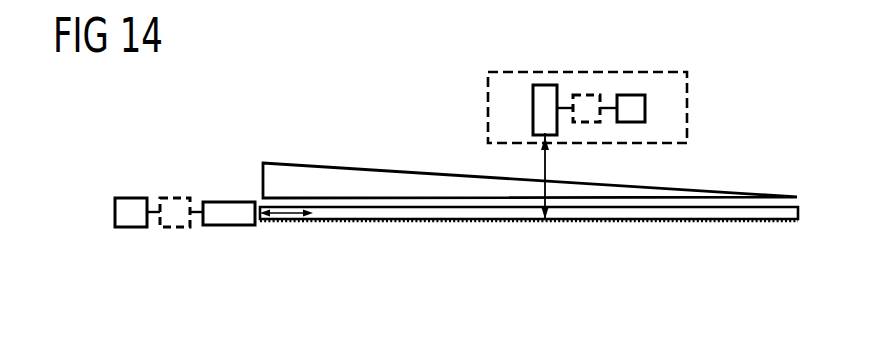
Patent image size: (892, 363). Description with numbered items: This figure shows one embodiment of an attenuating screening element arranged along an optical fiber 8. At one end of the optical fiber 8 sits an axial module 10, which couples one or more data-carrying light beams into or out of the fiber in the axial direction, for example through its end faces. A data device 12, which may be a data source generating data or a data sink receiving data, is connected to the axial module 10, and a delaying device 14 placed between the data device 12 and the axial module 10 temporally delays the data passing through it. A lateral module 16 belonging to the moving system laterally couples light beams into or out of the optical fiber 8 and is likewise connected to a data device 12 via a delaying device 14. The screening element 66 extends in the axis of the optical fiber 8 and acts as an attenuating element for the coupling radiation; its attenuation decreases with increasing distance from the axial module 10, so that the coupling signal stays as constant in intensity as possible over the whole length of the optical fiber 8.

The optical fiber 8 is at (373, 213).
The axial module 10 is at (227, 202).
The data device 12 is at (130, 198).
The delaying device 14 is at (173, 198).
The lateral module 16 is at (542, 85).
The screening element 66 is at (311, 165).